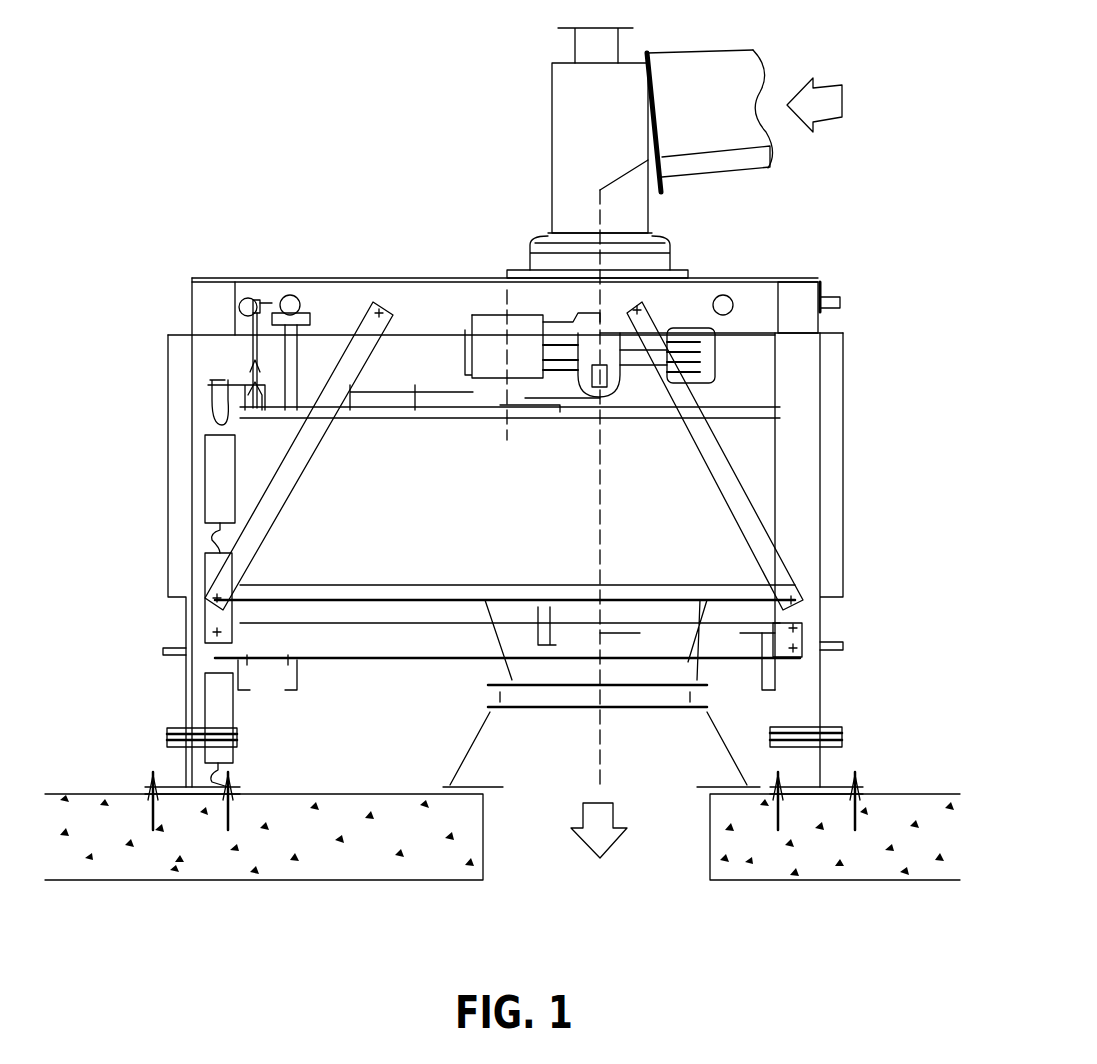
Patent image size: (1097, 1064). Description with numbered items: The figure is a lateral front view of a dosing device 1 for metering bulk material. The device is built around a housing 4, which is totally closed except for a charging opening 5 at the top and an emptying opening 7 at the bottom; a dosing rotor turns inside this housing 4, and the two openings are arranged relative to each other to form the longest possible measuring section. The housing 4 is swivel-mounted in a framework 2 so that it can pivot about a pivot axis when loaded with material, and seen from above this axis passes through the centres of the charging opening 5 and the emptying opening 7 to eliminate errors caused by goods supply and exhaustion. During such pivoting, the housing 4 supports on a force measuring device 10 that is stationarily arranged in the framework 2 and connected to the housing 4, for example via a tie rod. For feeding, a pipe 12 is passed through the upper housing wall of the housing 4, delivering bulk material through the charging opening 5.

The dosing device 1 is at (120, 506).
The framework 2 is at (757, 297).
The housing 4 is at (447, 531).
The charging opening 5 is at (525, 400).
The emptying opening 7 is at (660, 640).
The force measuring device 10 is at (247, 290).
The pipe 12 is at (551, 209).